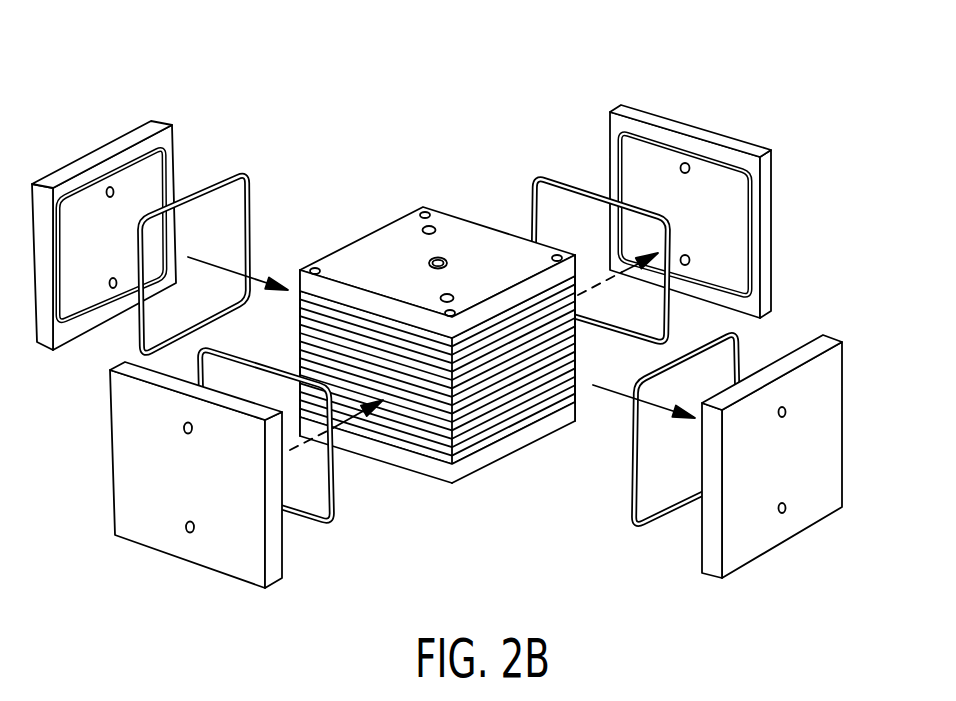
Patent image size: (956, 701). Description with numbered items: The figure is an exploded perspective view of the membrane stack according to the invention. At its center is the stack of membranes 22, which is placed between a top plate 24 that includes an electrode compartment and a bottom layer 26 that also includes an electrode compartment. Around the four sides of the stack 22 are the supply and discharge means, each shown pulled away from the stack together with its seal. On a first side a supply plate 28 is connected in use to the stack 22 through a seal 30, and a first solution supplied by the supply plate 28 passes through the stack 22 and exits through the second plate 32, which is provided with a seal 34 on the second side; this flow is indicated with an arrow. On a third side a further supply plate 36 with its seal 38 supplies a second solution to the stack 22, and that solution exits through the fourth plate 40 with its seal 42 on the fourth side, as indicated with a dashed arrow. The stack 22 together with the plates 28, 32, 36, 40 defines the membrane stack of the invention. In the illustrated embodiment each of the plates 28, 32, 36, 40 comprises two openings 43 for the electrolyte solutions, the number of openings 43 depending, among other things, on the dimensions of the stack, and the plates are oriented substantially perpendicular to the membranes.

The stack of membranes 22 is at (535, 445).
The top plate 24 is at (380, 243).
The bottom layer 26 is at (467, 472).
The supply plate 28 is at (92, 160).
The seal 30 is at (217, 177).
The second plate 32 is at (776, 498).
The seal 34 is at (740, 350).
The supply plate 36 is at (153, 532).
The seal 38 is at (338, 503).
The fourth plate 40 is at (687, 128).
The seal 42 is at (572, 183).
The openings 43 is at (780, 418).